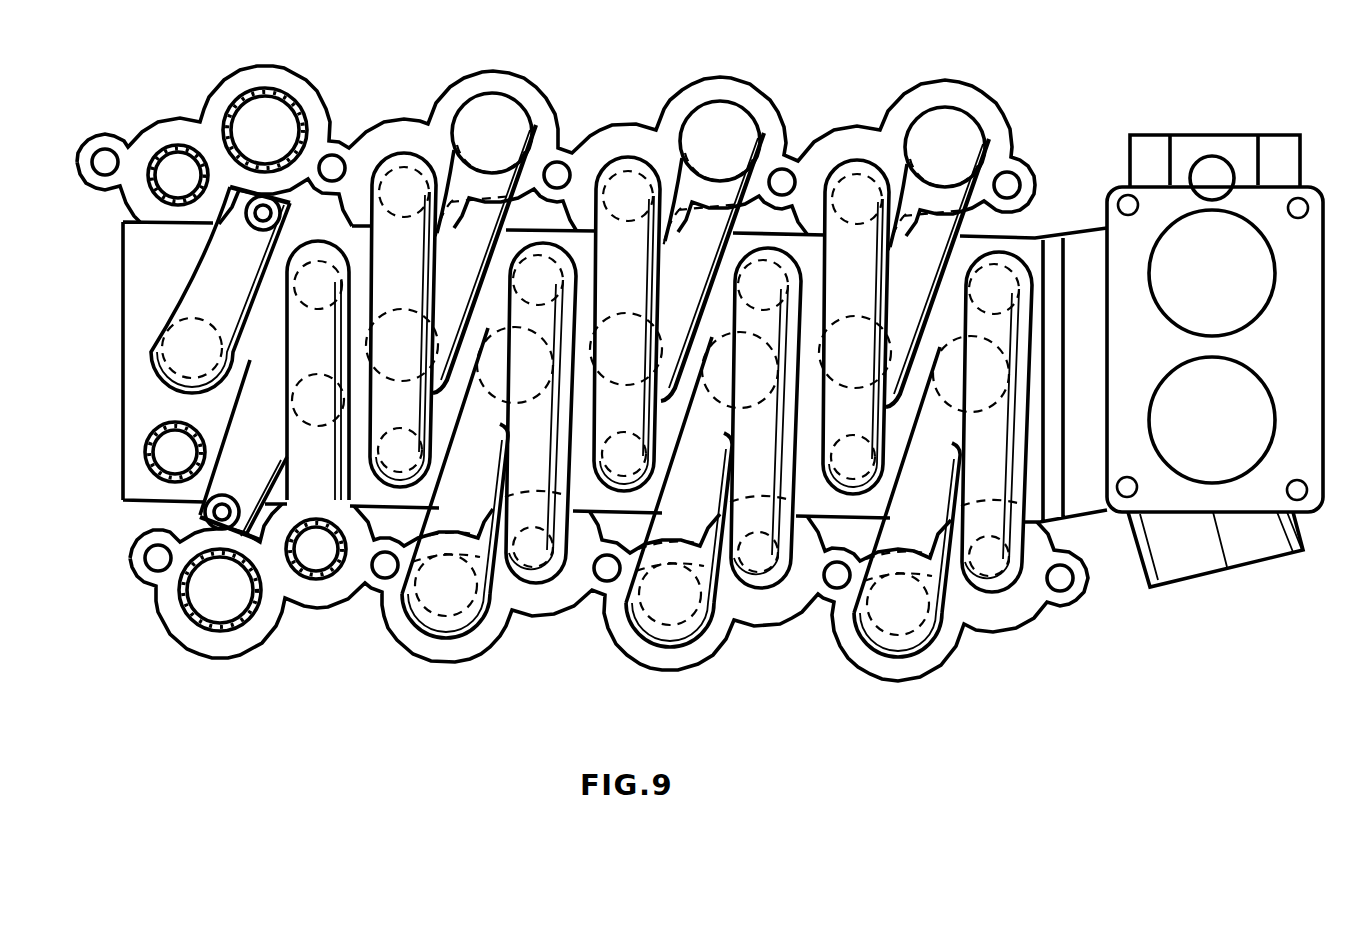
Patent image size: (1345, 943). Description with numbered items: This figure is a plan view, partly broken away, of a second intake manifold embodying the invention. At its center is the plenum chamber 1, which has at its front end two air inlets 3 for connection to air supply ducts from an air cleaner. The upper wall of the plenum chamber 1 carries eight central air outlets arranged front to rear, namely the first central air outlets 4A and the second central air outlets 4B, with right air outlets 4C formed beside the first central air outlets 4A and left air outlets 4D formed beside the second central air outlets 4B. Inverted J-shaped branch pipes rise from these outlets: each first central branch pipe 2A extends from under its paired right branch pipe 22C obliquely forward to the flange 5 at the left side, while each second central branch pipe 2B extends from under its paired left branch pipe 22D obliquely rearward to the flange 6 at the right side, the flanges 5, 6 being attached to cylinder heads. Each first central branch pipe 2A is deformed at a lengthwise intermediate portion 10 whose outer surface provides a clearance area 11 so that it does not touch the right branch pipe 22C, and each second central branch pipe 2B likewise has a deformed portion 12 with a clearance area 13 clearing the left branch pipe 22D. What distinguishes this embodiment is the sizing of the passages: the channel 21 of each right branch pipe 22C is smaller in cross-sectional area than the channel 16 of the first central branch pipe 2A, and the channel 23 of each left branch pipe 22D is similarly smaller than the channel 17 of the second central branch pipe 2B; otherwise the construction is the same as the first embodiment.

The plenum chamber 1 is at (122, 338).
The first central branch pipe 2A is at (267, 93).
The second central branch pipe 2B is at (232, 630).
The air inlet 3 is at (1236, 362).
The first central air outlet 4A is at (190, 326).
The second central air outlet 4B is at (296, 402).
The right air outlet 4C is at (150, 452).
The left air outlet 4D is at (350, 307).
The flange 5 is at (1005, 140).
The flange 6 is at (1034, 615).
The deformed portion 10 is at (247, 293).
The clearance area 11 is at (222, 262).
The deformed portion 12 is at (262, 465).
The clearance area 13 is at (530, 432).
The channel 16 is at (288, 118).
The channel 17 is at (205, 622).
The channel 21 is at (160, 153).
The right branch pipe 22C is at (176, 150).
The left branch pipe 22D is at (317, 582).
The channel 23 is at (327, 562).